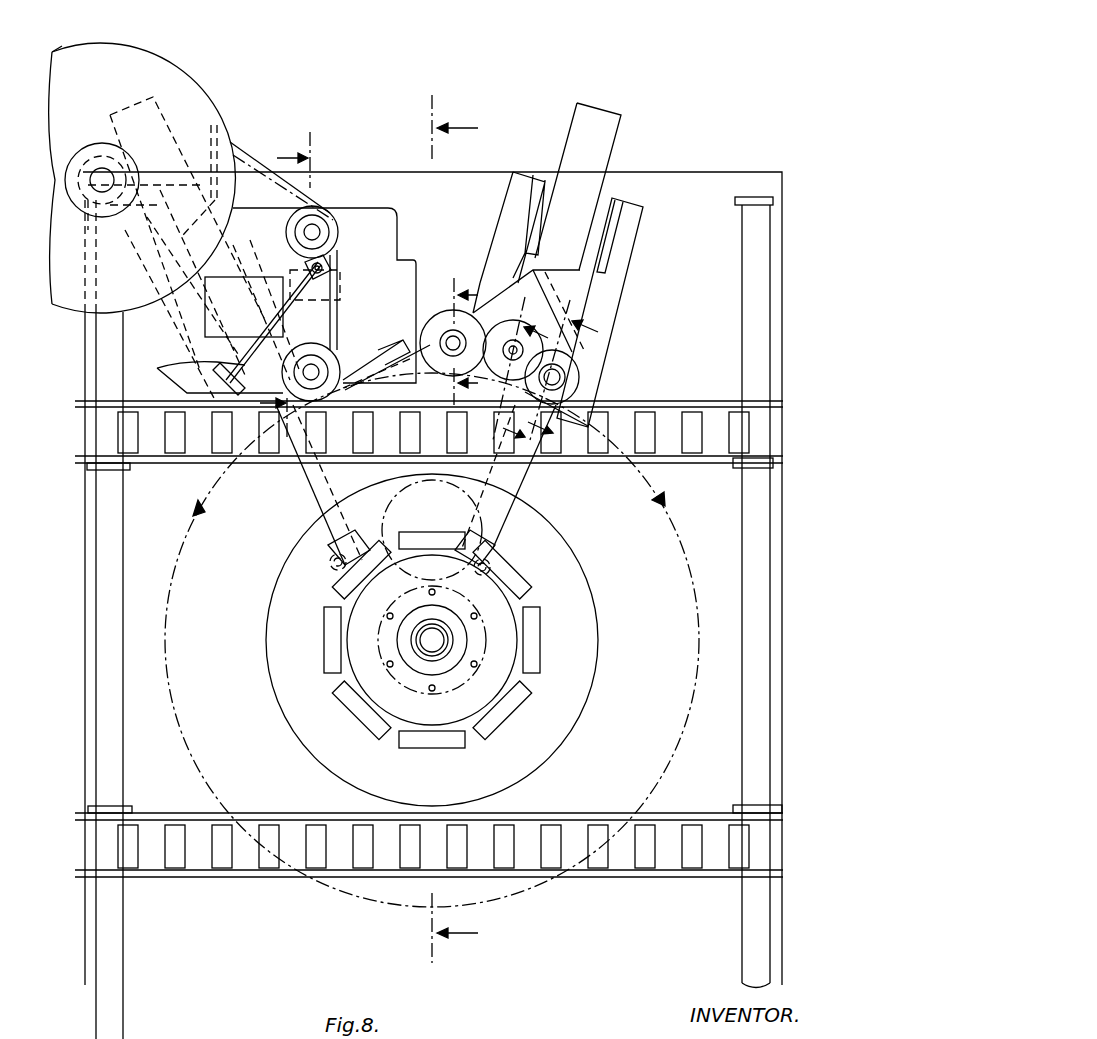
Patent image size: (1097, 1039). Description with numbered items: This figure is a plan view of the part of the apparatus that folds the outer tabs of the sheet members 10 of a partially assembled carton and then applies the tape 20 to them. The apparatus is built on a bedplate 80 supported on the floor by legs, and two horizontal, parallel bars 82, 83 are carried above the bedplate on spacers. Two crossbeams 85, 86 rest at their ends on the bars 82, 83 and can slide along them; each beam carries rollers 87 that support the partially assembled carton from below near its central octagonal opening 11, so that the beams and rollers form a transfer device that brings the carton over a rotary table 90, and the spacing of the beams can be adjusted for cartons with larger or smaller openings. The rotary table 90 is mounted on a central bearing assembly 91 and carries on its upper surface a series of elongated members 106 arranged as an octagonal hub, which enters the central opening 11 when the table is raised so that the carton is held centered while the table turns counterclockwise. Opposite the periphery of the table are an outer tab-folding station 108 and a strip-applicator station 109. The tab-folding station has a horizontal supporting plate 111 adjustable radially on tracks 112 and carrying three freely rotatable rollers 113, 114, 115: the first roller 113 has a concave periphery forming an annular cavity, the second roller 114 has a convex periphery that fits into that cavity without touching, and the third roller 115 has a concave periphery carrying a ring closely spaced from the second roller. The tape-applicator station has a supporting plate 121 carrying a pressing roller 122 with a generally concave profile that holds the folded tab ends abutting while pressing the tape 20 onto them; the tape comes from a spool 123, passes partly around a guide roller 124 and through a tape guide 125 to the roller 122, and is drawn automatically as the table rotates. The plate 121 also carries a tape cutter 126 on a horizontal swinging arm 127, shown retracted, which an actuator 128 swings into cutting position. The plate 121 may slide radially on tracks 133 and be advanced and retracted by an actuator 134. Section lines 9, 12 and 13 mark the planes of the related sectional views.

The section line 9- 9 is at (455, 530).
The sheet member 10 is at (284, 291).
The central octagonal opening 11 is at (570, 374).
The section line 12- 12 is at (525, 365).
The section line 13- 13 is at (471, 339).
The tape 20 is at (248, 222).
The bedplate 80 is at (697, 188).
The bar 82 is at (110, 660).
The bar 83 is at (755, 680).
The crossbeam 85 is at (688, 400).
The crossbeam 86 is at (640, 872).
The rollers 87 is at (175, 440).
The rotary table 90 is at (545, 745).
The central bearing assembly 91 is at (410, 656).
The elongated members 106 is at (330, 632).
The outer tab-folding station 108 is at (618, 338).
The strip-applicator station 109 is at (340, 200).
The supporting plate 111 is at (517, 283).
The tracks 112 is at (517, 202).
The roller 113 is at (580, 377).
The roller 114 is at (505, 330).
The roller 115 is at (447, 310).
The supporting plate 121 is at (378, 212).
The roller 122 is at (337, 363).
The spool 123 is at (185, 88).
The guide roller 124 is at (302, 208).
The tape guide 125 is at (343, 290).
The tape cutter 126 is at (245, 430).
The swinging arm 127 is at (172, 372).
The actuator 128 is at (213, 318).
The tracks 133 is at (230, 127).
The actuator 134 is at (143, 97).